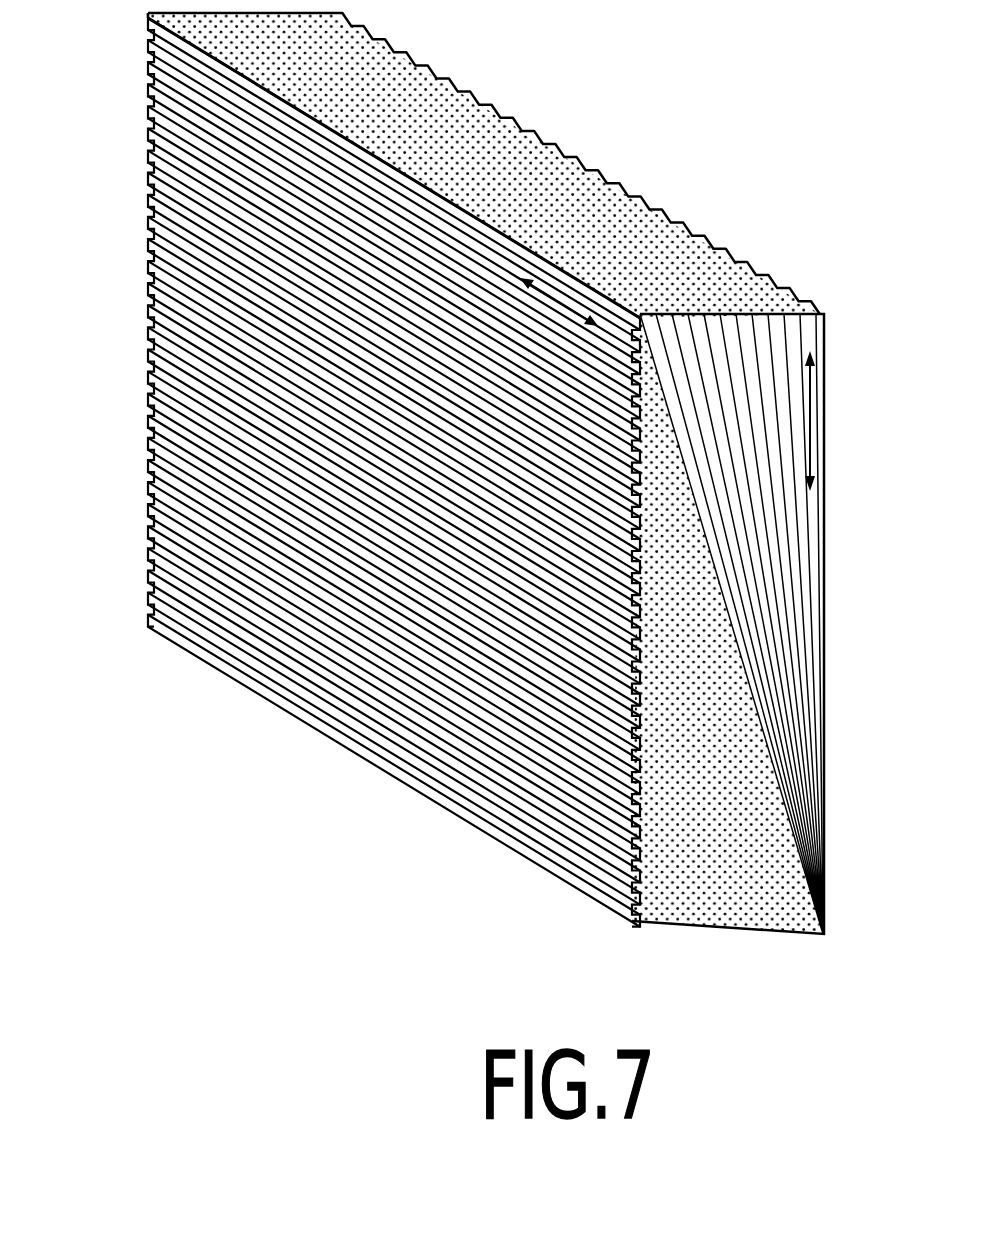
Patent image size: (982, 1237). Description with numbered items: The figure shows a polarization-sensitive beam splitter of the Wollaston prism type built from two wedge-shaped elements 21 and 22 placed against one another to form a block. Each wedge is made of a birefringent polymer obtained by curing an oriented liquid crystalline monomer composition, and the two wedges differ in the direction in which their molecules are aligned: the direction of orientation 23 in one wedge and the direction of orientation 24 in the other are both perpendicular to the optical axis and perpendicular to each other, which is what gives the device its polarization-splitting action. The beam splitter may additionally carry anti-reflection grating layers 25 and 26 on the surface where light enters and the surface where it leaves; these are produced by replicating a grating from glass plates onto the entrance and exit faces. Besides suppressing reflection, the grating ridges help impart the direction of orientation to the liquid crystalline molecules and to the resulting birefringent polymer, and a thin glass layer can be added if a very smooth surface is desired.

The wedge-shaped element 21 is at (580, 167).
The wedge-shaped element 22 is at (315, 703).
The direction of orientation 23 is at (805, 403).
The direction of orientation 24 is at (578, 278).
The anti-reflection grating layer 25 is at (452, 82).
The anti-reflection grating layer 26 is at (168, 208).